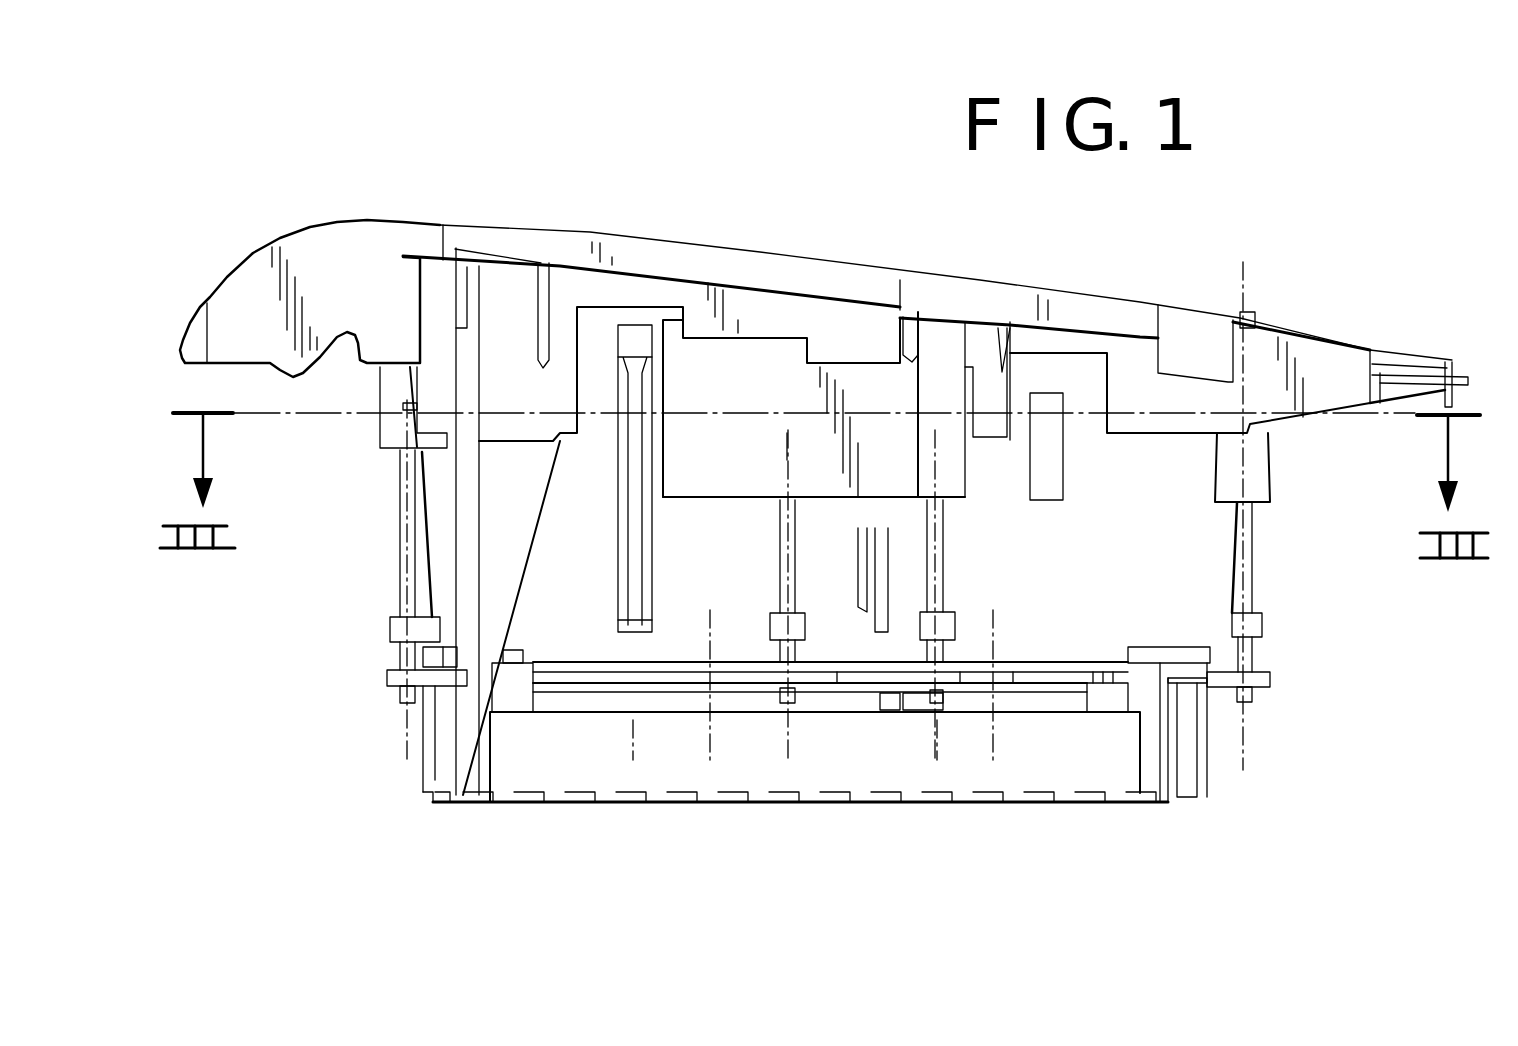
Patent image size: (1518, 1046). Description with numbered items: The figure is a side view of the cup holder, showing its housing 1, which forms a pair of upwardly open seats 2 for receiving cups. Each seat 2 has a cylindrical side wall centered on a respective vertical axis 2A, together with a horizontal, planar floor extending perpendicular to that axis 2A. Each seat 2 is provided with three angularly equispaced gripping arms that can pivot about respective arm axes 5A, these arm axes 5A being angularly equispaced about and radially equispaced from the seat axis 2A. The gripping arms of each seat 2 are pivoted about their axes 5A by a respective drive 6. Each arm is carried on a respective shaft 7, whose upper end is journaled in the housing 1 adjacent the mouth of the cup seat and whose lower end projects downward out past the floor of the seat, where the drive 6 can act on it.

The upper cover 1 is at (305, 207).
The cover plate 2 is at (660, 236).
The plate portion 2A is at (997, 720).
The support portion 5A is at (633, 722).
The base frame 6 is at (595, 723).
The bolt 7 is at (403, 582).